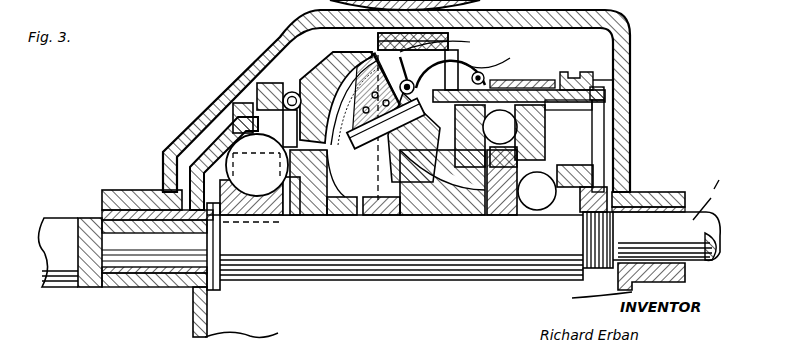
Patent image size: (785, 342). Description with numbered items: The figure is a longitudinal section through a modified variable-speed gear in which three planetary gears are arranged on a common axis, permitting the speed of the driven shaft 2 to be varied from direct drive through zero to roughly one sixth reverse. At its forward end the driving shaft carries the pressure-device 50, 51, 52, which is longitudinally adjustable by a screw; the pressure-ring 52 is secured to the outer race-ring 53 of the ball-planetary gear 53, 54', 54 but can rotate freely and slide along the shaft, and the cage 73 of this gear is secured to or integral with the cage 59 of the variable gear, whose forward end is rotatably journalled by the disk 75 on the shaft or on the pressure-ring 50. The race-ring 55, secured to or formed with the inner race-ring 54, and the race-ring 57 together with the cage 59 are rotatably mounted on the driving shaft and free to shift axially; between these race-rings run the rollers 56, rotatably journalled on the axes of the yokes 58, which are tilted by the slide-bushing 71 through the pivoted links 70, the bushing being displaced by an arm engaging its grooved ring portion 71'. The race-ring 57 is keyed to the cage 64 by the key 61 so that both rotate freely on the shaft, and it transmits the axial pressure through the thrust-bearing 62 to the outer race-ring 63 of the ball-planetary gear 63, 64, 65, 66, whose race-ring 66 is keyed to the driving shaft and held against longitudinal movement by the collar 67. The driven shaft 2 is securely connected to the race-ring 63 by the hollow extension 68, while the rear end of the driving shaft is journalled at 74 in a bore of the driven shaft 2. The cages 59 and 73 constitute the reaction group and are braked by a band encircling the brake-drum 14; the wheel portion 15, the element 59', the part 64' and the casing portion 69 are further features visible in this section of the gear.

The driven shaft 2 is at (57, 287).
The brake-drum 14 is at (450, 43).
The wheel 15 is at (440, 37).
The pressure-ring 50 is at (585, 165).
The pressure-device element 51 is at (537, 196).
The pressure-ring 52 is at (500, 215).
The outer race-ring 53 is at (533, 143).
The inner race-ring 54 is at (519, 108).
The ball 54' is at (528, 138).
The race-ring 55 is at (447, 200).
The rollers 56 is at (356, 112).
The race-ring 57 is at (333, 63).
The yokes 58 is at (396, 117).
The cage 59 is at (475, 141).
The ring 59' is at (503, 63).
The key 61 is at (352, 127).
The thrust-bearing 62 is at (298, 93).
The outer race-ring 63 is at (272, 95).
The cage 64 is at (323, 200).
The block 64' is at (235, 84).
The ball 65 is at (187, 160).
The outer race-ring 66 is at (237, 200).
The collar 67 is at (213, 265).
The hollow extension 68 is at (208, 143).
The housing 69 is at (203, 110).
The pivoted links 70 is at (456, 64).
The slide-bushing 71 is at (583, 69).
The grooved ring portion 71' is at (626, 56).
The cage 73 is at (510, 87).
The rear journal of shaft 1 74 is at (130, 257).
The disk 75 is at (604, 97).